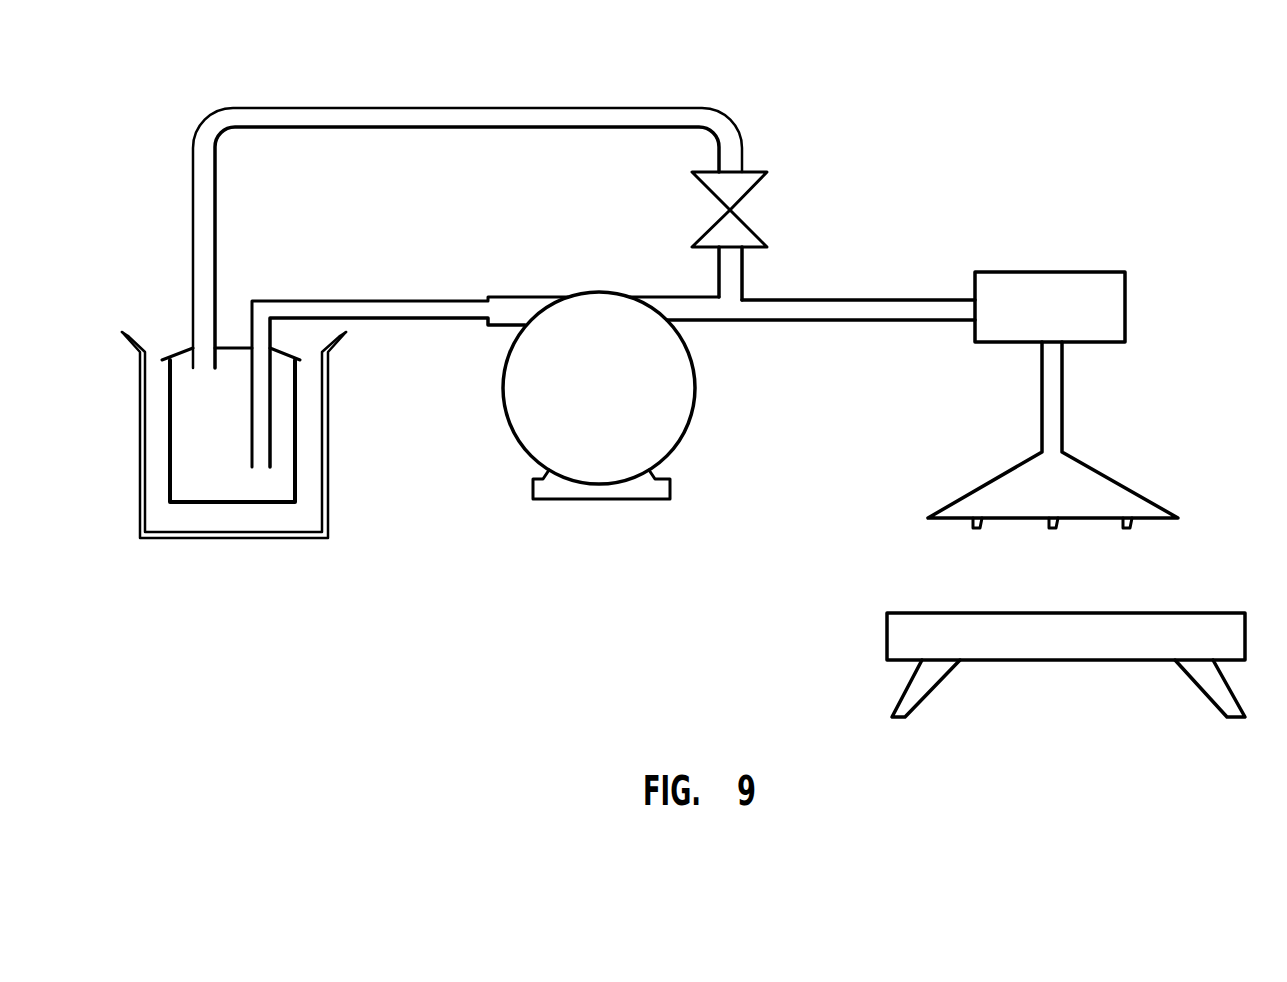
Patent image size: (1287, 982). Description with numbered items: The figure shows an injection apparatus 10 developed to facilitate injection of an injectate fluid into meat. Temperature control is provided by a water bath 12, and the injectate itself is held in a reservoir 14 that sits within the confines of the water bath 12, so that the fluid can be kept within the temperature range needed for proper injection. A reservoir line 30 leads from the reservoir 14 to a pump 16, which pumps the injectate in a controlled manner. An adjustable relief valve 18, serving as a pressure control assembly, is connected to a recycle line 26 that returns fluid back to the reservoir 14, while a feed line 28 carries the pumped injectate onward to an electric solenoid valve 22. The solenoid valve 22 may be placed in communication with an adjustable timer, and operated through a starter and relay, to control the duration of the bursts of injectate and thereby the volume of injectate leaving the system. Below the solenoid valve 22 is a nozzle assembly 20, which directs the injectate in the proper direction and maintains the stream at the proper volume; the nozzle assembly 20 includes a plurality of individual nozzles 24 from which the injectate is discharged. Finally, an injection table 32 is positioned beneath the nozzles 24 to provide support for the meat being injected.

The injection apparatus 10 is at (915, 105).
The water bath 12 is at (328, 433).
The reservoir 14 is at (223, 440).
The pump 16 is at (588, 415).
The adjustable relief valve 18 is at (748, 198).
The nozzle assembly 20 is at (1002, 473).
The electric solenoid valve 22 is at (1128, 318).
The individual nozzles 24 is at (976, 530).
The recycle line 26 is at (334, 118).
The feed line 28 is at (857, 312).
The reservoir line 30 is at (410, 310).
The injection table 32 is at (1150, 613).